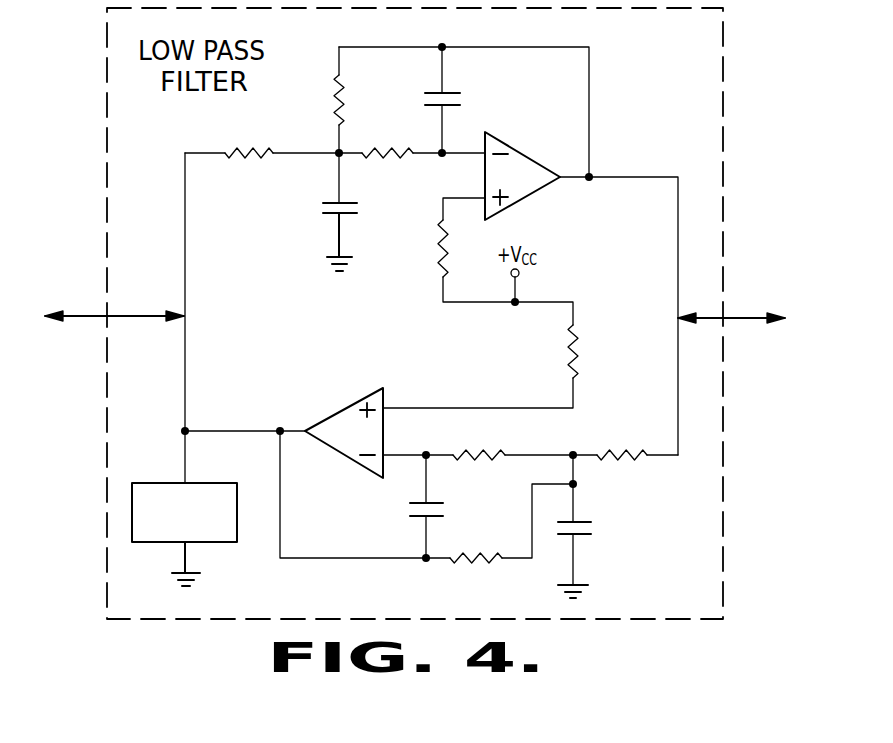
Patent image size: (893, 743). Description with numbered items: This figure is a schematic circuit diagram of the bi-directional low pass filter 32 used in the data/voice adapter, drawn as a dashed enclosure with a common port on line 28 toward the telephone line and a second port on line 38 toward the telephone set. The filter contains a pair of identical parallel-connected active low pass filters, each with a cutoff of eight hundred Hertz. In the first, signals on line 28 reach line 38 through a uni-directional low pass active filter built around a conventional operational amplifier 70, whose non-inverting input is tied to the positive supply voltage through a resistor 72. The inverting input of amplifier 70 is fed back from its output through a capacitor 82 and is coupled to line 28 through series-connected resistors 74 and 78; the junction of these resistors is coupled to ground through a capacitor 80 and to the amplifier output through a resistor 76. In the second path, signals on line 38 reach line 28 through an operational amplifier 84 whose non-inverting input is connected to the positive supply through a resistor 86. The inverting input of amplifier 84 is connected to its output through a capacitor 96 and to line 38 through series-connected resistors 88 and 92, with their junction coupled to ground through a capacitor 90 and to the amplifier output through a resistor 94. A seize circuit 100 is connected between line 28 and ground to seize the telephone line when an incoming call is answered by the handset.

The line 28 is at (83, 310).
The bi-directional low pass filter 32 is at (726, 470).
The line 38 is at (745, 313).
The operational amplifier 70 is at (517, 150).
The resistor 72 is at (434, 250).
The resistor 74 is at (245, 140).
The resistor 76 is at (331, 105).
The resistor 78 is at (389, 163).
The capacitor 80 is at (325, 206).
The capacitor 82 is at (458, 102).
The operational amplifier 84 is at (367, 393).
The resistor 86 is at (580, 347).
The resistor 88 is at (628, 452).
The capacitor 90 is at (592, 527).
The resistor 92 is at (497, 456).
The resistor 94 is at (475, 570).
The capacitor 96 is at (408, 505).
The seize circuit 100 is at (229, 543).